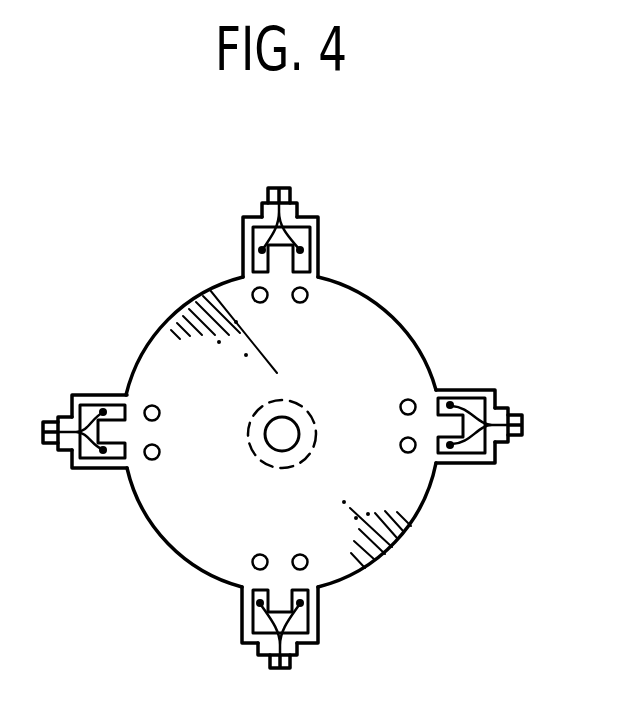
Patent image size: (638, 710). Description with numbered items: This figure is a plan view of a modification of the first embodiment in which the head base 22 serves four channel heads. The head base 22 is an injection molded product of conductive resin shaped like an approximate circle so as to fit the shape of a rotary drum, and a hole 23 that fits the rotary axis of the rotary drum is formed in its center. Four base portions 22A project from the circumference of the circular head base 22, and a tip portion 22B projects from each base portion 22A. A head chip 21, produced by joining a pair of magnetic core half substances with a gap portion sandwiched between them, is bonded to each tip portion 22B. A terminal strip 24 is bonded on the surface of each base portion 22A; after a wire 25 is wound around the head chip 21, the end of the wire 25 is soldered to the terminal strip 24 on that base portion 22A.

The head chip 21 is at (291, 195).
The head base 22 is at (417, 331).
The base portion 22A is at (243, 242).
The tip portion 22B is at (263, 211).
The hole 23 is at (285, 432).
The terminal strip 24 is at (253, 264).
The wire 25 is at (310, 238).